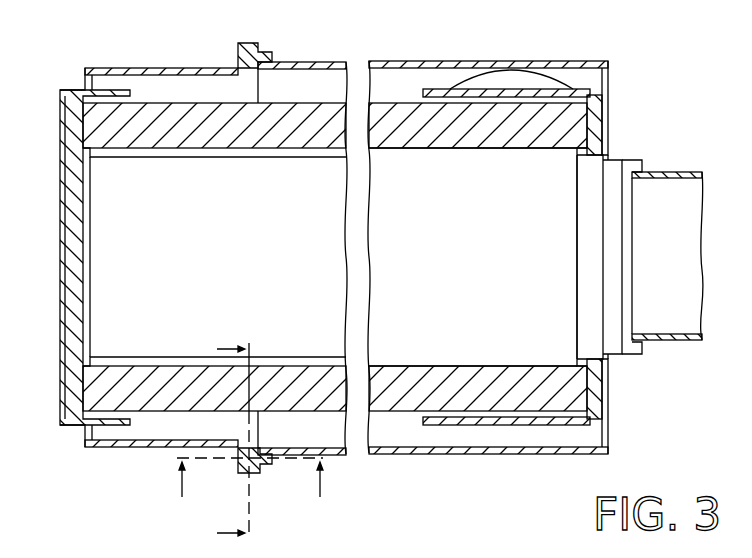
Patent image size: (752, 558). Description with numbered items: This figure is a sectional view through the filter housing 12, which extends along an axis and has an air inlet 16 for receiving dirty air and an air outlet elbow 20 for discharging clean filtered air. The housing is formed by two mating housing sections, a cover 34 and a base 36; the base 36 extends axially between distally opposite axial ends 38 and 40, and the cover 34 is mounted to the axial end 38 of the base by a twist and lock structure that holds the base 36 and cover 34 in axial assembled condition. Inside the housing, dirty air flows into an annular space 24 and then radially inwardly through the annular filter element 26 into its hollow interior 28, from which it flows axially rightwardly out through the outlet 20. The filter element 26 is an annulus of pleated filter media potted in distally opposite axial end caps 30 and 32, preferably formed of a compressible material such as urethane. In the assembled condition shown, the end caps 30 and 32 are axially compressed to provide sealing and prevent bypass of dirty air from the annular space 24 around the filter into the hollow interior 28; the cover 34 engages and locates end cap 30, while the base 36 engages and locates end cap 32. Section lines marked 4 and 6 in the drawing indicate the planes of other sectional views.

The filter housing 12 is at (427, 468).
The air inlet 16 is at (527, 72).
The air outlet elbow 20 is at (672, 172).
The annular space 24 is at (402, 76).
The annular filter element 26 is at (455, 150).
The hollow interior 28 is at (448, 279).
The axial end cap 30 is at (62, 130).
The axial end cap 32 is at (602, 122).
The cover 34 is at (118, 67).
The base 36 is at (306, 62).
The axial end 38 is at (237, 62).
The axial end 40 is at (608, 69).
The section line 4 is at (251, 488).
The section line 6 is at (243, 441).